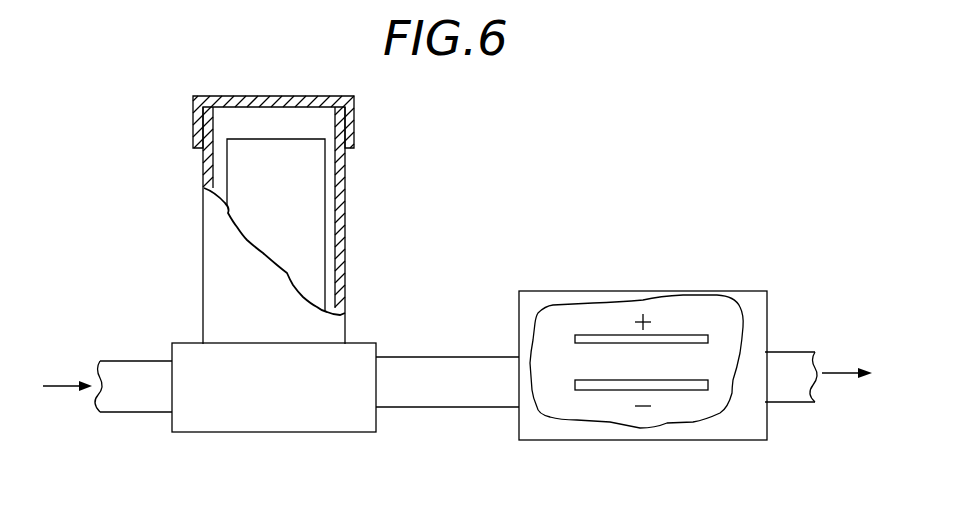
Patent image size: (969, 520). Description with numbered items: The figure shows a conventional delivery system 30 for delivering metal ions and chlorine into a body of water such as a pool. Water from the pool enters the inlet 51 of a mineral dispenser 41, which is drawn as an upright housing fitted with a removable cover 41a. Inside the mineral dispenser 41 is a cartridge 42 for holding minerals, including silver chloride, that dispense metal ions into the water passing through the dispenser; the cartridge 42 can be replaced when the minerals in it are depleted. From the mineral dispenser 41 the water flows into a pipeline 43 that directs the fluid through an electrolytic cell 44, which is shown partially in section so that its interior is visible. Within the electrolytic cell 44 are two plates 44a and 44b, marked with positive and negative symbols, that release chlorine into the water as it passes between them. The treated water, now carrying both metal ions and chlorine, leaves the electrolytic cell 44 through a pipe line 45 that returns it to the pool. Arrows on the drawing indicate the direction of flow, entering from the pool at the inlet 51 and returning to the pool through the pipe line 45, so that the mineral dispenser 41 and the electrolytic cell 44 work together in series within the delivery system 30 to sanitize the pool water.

The delivery system 30 is at (452, 154).
The mineral dispenser 41 is at (203, 264).
The removable cover 41a is at (240, 100).
The cartridge 42 is at (298, 205).
The pipeline 43 is at (430, 357).
The electrolytic cell 44 is at (595, 288).
The plate 44a is at (667, 335).
The plate 44b is at (687, 380).
The pipe line 45 is at (793, 402).
The inlet 51 is at (152, 413).